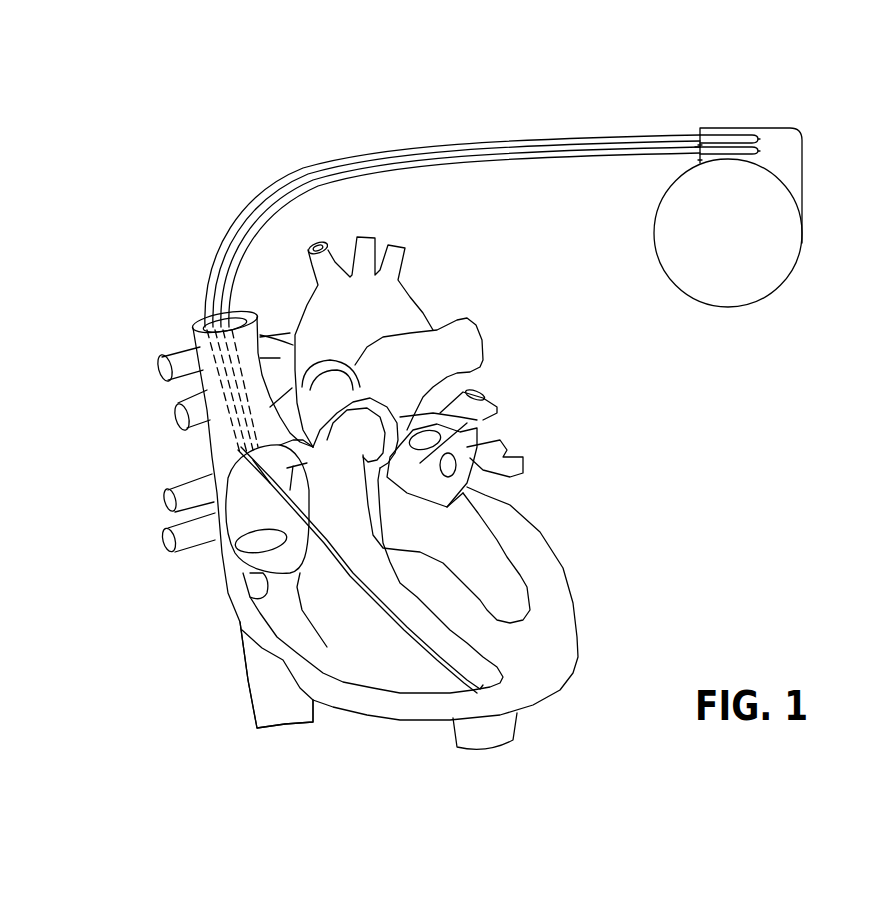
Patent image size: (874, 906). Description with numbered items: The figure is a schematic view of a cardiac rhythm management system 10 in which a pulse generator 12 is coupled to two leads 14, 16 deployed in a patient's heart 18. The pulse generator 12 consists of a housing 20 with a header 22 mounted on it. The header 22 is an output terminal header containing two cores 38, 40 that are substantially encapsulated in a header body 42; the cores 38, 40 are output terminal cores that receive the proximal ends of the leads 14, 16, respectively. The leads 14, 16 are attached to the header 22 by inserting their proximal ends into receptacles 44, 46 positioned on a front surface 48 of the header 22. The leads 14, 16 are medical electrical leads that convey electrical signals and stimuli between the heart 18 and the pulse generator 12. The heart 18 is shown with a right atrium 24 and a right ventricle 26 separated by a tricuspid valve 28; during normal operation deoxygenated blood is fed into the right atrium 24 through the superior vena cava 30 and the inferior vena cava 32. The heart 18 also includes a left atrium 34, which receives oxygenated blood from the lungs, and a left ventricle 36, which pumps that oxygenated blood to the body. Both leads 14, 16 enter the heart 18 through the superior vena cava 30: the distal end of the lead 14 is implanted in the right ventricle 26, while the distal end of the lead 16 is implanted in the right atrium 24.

The cardiac rhythm management (CRM) system 10 is at (240, 130).
The pulse generator 12 is at (741, 181).
The lead 14 is at (520, 165).
The lead 16 is at (555, 126).
The heart 18 is at (346, 522).
The housing 20 is at (792, 280).
The header 22 is at (806, 199).
The right atrium 24 is at (247, 488).
The right ventricle 26 is at (250, 650).
The tricuspid valve 28 is at (270, 577).
The superior vena cava 30 is at (195, 325).
The inferior vena cava 32 is at (265, 733).
The left atrium 34 is at (458, 438).
The left ventricle 36 is at (500, 565).
The core 38 is at (760, 151).
The core 40 is at (760, 139).
The header body 42 is at (787, 175).
The receptacle 44 is at (698, 146).
The receptacle 46 is at (700, 145).
The front surface 48 is at (700, 161).